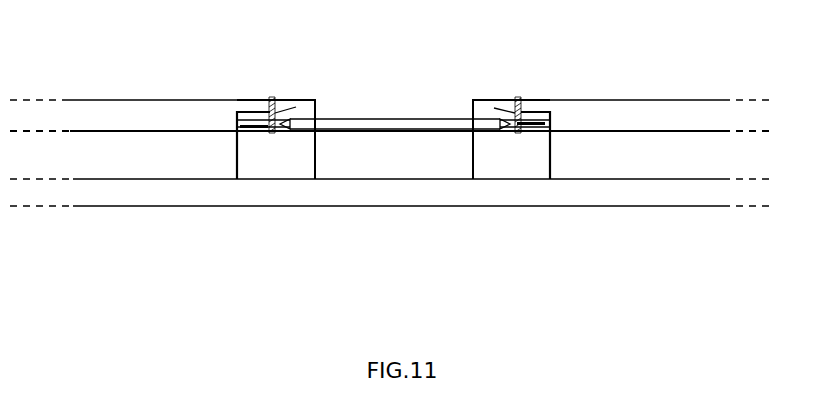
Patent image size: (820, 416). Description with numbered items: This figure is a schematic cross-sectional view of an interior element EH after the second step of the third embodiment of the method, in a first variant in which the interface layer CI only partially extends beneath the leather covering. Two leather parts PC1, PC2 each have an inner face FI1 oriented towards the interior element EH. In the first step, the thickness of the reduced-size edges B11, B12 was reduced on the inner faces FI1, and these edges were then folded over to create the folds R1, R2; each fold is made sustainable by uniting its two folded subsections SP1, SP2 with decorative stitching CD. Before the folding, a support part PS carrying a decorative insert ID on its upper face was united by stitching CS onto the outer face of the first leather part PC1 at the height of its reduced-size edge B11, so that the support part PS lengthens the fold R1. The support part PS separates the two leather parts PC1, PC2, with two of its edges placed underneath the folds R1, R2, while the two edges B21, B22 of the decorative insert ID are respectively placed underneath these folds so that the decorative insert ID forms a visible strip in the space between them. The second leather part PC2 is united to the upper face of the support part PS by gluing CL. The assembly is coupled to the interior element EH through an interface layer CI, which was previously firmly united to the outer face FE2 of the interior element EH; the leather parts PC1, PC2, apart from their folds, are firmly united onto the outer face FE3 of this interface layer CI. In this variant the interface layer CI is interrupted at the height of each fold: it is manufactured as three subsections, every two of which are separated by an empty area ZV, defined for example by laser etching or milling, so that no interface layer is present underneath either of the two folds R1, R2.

The first leather part PC1 is at (117, 100).
The second leather part PC2 is at (705, 99).
The reduced-size edge of first leather part B11 is at (240, 100).
The reduced-size edge of second leather part B12 is at (548, 101).
The first edge of decorative insert B21 is at (297, 129).
The second edge of decorative insert B22 is at (488, 126).
The fold of first leather part R1 is at (270, 147).
The fold of second leather part R2 is at (518, 152).
The first folded subsection SP1 is at (260, 100).
The second folded subsection SP2 is at (280, 123).
The decorative stitching CD is at (277, 100).
The decorative insert ID is at (385, 118).
The stitching CS is at (262, 125).
The support part PS is at (383, 135).
The interface layer CI is at (80, 170).
The gluing CL is at (541, 122).
The empty area ZV is at (267, 165).
The inner face FI1 is at (117, 133).
The outer face of interior element FE2 is at (665, 183).
The outer face of interface layer FE3 is at (673, 135).
The interior element EH is at (151, 202).